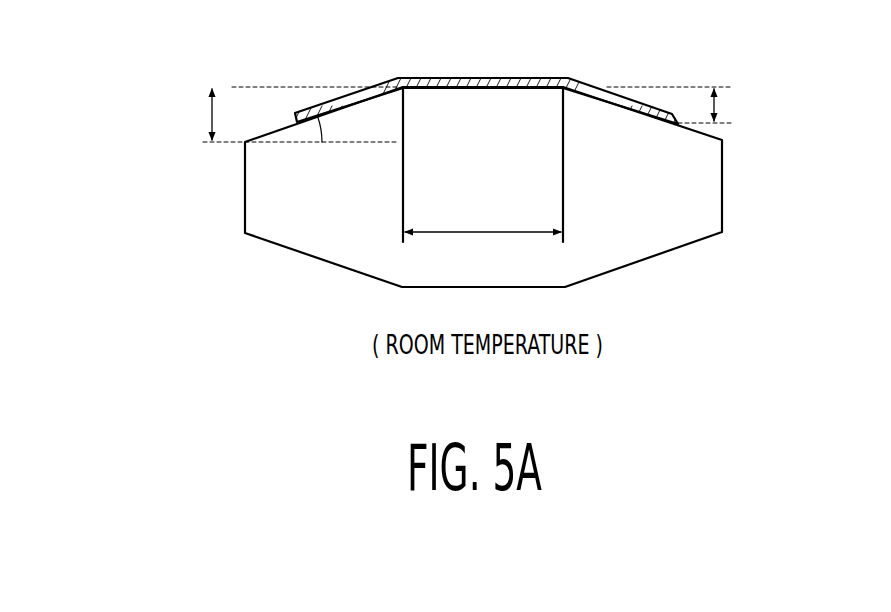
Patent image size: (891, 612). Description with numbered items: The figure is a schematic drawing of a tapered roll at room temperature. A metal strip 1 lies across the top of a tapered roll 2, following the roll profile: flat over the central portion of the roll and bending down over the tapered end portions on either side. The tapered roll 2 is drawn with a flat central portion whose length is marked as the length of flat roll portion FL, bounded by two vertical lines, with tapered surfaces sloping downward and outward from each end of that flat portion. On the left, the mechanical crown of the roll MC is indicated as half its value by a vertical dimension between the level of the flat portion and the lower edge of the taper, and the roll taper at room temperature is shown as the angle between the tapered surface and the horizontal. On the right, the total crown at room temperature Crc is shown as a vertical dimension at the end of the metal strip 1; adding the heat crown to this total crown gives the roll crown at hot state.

The metal strip 1 is at (563, 76).
The tapered roll 2 is at (682, 238).
The mechanical crown of the roll MC is at (186, 113).
The total crown at room temperature Crc is at (700, 105).
The length of flat roll portion FL is at (483, 219).